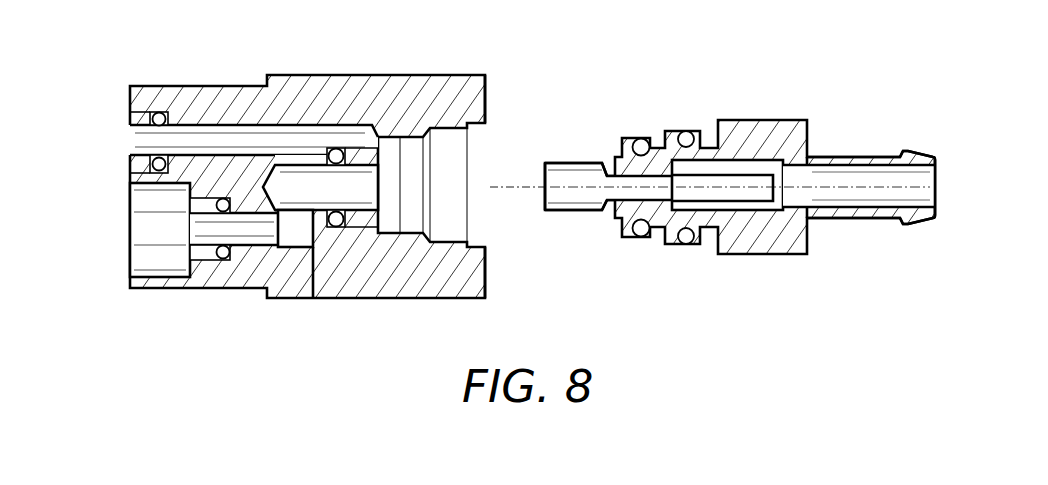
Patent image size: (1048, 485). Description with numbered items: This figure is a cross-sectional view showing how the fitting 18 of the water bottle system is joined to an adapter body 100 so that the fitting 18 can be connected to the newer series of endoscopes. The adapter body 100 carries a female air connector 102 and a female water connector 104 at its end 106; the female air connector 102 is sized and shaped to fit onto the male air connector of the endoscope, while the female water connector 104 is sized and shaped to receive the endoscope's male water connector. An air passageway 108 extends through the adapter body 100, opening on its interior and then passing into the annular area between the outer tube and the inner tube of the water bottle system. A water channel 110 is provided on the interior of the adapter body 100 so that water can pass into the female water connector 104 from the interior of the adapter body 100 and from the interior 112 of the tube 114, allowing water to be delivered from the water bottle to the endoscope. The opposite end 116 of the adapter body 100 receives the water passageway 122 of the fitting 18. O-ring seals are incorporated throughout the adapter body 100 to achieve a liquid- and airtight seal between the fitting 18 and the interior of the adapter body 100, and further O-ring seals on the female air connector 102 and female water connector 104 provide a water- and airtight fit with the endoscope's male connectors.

The fitting 18 is at (783, 122).
The adapter body 100 is at (380, 75).
The female air connector 102 is at (137, 145).
The female water connector 104 is at (140, 252).
The end 106 is at (127, 185).
The air passageway 108 is at (233, 142).
The water channel 110 is at (262, 232).
The interior 112 is at (937, 178).
The tube 114 is at (853, 215).
The end 116 is at (485, 100).
The water passageway 122 is at (543, 197).